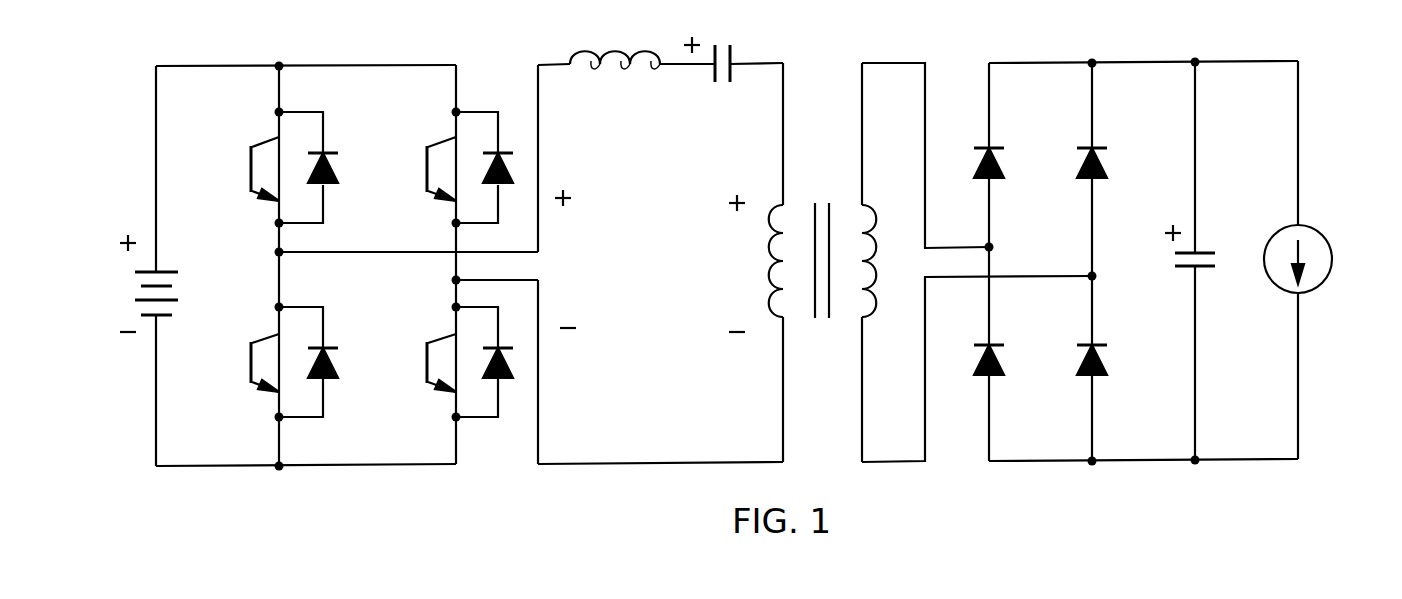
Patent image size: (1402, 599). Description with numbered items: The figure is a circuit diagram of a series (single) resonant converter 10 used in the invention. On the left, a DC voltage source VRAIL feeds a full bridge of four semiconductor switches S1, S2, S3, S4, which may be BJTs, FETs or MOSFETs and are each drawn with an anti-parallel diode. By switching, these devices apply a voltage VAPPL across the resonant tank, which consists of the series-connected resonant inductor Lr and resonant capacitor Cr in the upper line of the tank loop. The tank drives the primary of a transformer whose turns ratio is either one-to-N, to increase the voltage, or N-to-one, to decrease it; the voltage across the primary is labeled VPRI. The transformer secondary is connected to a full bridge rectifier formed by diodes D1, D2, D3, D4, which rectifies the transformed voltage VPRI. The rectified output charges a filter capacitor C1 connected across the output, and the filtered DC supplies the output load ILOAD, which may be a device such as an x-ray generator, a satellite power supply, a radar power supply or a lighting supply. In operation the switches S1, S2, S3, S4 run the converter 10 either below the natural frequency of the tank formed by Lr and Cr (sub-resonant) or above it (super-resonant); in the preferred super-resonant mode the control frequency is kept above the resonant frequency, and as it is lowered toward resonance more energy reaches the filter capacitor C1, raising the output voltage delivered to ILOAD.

The single resonant converter 10 is at (192, 500).
The semiconductor switch S1 is at (251, 168).
The semiconductor switch S2 is at (251, 364).
The semiconductor switch S3 is at (427, 168).
The semiconductor switch S4 is at (427, 364).
The DC voltage source VRAIL is at (115, 266).
The applied voltage VAPPL is at (660, 264).
The resonant tank inductor Lr is at (599, 38).
The resonant tank capacitor Cr is at (721, 47).
The transformer primary voltage VPRI is at (739, 262).
The rectifier diode D1 is at (1007, 155).
The rectifier diode D2 is at (1006, 354).
The rectifier diode D3 is at (1107, 169).
The rectifier diode D4 is at (1105, 368).
The filter capacitor C1 is at (1200, 261).
The output load ILOAD is at (1321, 260).